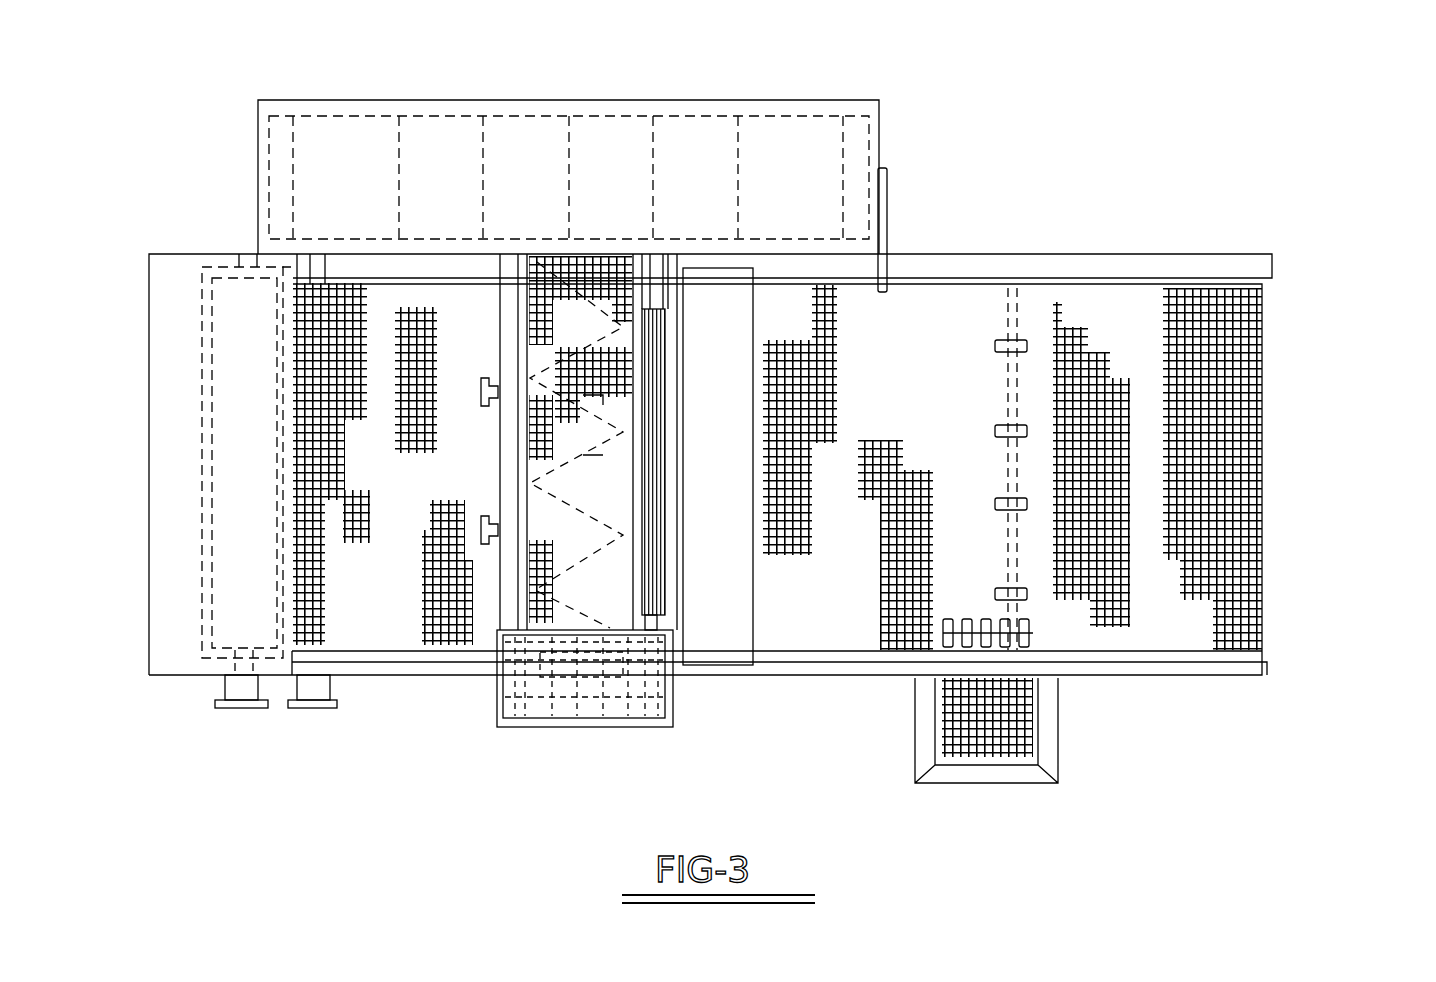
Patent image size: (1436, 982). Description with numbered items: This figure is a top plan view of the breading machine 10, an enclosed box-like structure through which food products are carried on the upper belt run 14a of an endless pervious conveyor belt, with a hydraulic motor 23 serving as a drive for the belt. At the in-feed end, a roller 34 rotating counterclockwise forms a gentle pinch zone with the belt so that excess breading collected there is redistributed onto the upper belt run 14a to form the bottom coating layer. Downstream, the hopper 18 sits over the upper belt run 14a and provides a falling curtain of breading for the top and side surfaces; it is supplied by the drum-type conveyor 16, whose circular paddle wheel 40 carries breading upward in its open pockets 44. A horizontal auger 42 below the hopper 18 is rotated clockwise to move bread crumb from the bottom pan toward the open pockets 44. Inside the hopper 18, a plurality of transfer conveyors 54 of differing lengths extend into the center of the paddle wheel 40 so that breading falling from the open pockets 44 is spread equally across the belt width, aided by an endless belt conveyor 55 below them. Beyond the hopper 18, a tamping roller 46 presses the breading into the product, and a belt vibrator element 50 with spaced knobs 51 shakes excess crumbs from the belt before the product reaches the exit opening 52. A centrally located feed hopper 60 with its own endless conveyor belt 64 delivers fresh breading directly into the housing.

The breading machine 10 is at (1005, 170).
The upper belt run 14a is at (402, 607).
The drum-type conveyor 16 is at (695, 100).
The hopper 18 is at (505, 378).
The hydraulic motor 23 is at (312, 712).
The roller 34 is at (243, 470).
The circular paddle wheel 40 is at (350, 112).
The horizontal auger 42 is at (582, 565).
The open pockets 44 is at (515, 155).
The tamping roller 46 is at (713, 648).
The belt vibrator element 50 is at (1005, 385).
The spaced knobs 51 is at (997, 505).
The exit opening 52 is at (1265, 495).
The transfer conveyors 54 is at (618, 370).
The endless belt conveyor 55 is at (527, 605).
The feed hopper 60 is at (908, 742).
The endless conveyor belt 64 is at (1020, 737).